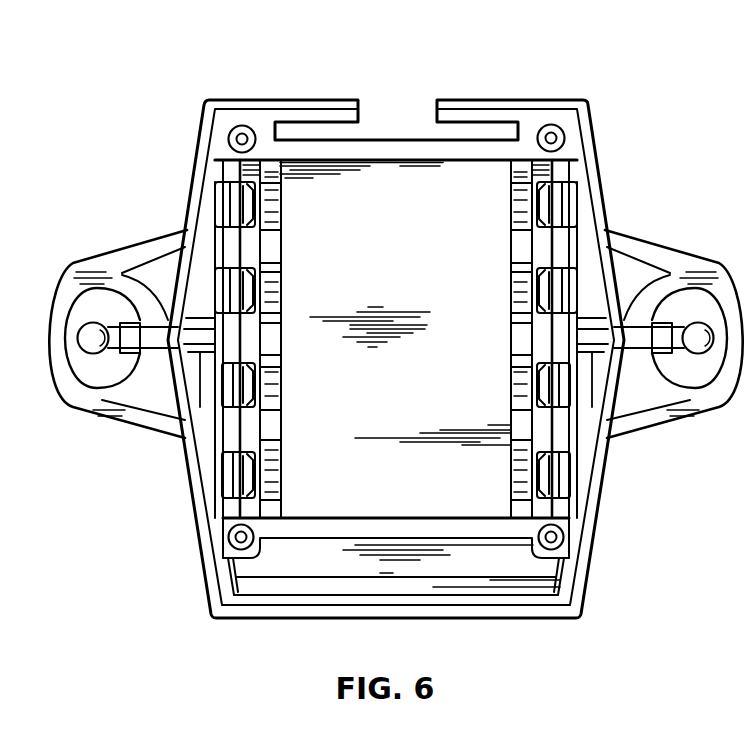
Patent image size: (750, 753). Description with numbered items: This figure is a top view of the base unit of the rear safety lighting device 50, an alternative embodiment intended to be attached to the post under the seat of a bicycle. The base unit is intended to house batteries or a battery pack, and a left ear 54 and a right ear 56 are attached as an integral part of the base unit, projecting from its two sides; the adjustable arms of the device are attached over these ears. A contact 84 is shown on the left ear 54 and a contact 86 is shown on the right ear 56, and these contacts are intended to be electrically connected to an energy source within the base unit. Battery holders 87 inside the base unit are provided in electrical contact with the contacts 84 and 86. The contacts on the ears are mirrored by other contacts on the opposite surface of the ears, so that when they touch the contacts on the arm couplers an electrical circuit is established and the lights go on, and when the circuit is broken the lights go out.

The rear safety lighting device 50 is at (598, 138).
The left ear 54 is at (103, 396).
The right ear 56 is at (687, 400).
The contact 84 is at (128, 330).
The contact 86 is at (660, 332).
The battery holders 87 is at (245, 192).